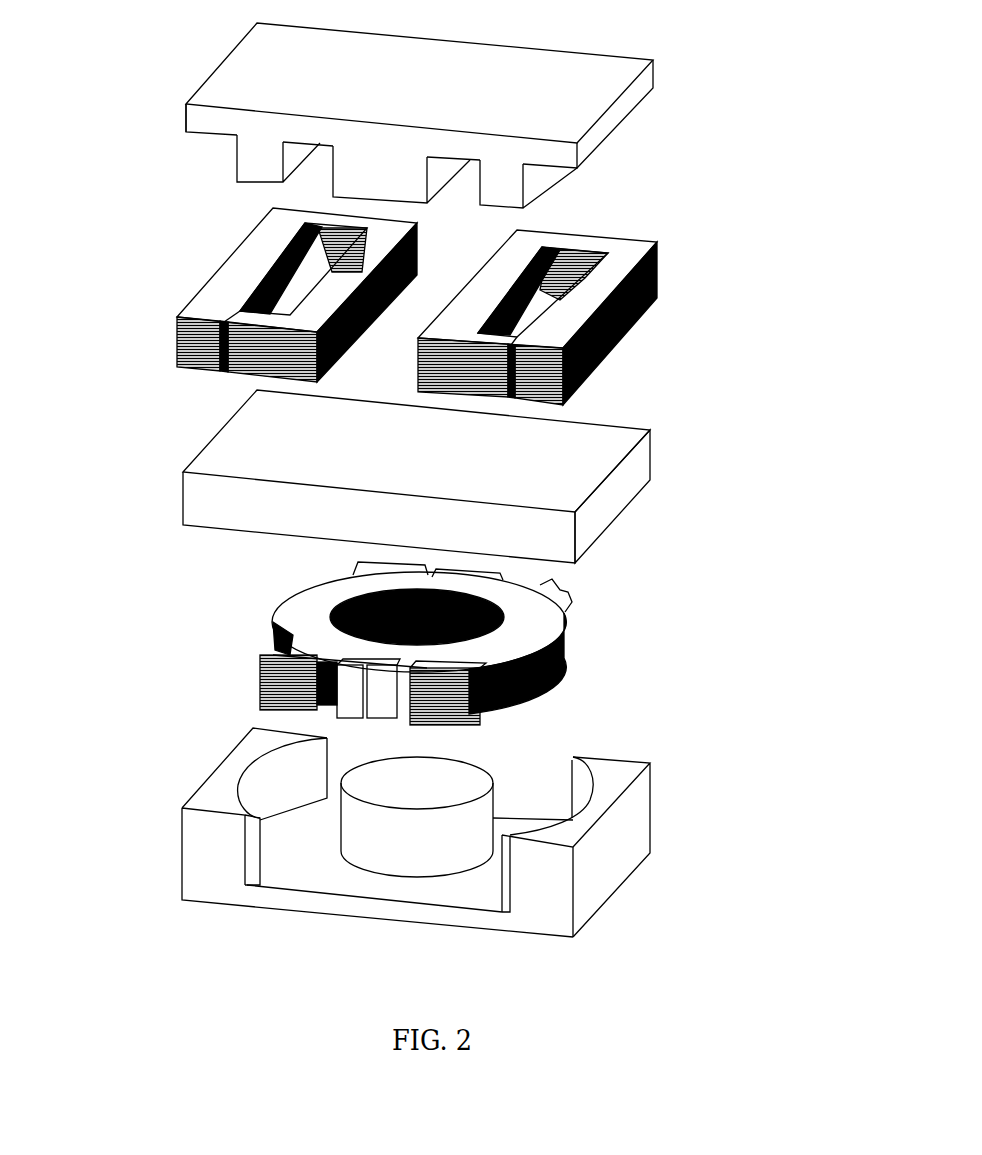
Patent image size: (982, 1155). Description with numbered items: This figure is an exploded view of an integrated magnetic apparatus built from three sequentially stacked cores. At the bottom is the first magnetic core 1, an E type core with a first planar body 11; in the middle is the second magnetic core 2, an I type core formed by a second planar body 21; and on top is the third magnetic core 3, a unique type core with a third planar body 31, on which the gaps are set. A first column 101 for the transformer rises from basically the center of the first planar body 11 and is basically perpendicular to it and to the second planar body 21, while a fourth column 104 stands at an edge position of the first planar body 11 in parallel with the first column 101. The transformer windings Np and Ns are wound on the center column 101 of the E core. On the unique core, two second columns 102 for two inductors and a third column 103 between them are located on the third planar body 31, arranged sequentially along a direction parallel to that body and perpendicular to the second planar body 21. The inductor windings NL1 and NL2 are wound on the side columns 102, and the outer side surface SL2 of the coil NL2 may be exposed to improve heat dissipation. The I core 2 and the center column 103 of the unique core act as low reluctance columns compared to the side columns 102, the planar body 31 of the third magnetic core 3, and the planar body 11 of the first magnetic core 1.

The first magnetic core 1 is at (454, 852).
The first column 101 is at (355, 823).
The fourth column 104 is at (207, 842).
The first planar body 11 is at (415, 915).
The second magnetic core 2 is at (475, 483).
The second planar body 21 is at (242, 525).
The third magnetic core 3 is at (455, 132).
The third planar body 31 is at (186, 108).
The second column 102 is at (252, 162).
The third column 103 is at (370, 155).
The inductor winding NL1 is at (155, 310).
The inductor winding NL2 is at (597, 317).
The outer side surface SL2 is at (605, 335).
The transformer windings Np and Ns is at (592, 630).